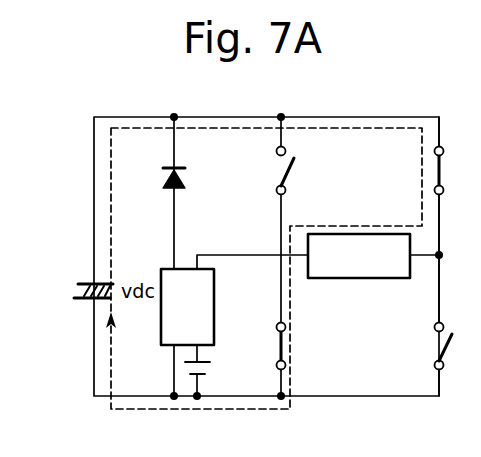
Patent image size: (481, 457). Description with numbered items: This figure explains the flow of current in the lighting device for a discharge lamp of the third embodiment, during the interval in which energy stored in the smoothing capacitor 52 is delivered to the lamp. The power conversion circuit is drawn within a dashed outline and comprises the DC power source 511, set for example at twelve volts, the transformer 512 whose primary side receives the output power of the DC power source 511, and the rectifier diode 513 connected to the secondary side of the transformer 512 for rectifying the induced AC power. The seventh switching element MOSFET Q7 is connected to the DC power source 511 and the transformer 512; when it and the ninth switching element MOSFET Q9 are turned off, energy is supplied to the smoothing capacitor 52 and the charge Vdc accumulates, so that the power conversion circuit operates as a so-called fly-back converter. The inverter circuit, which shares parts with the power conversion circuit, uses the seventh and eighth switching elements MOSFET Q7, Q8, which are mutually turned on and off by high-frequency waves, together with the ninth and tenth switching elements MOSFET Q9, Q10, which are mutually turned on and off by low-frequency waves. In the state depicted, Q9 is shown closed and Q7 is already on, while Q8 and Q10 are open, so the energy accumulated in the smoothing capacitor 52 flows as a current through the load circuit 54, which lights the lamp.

The smoothing capacitor 52 is at (78, 292).
The rectifier diode 513 is at (164, 190).
The transformer 512 is at (175, 338).
The DC power source 511 is at (207, 368).
The load circuit 54 is at (342, 278).
The seventh switching element MOSFET Q7 is at (264, 346).
The eighth switching element MOSFET Q8 is at (268, 171).
The ninth switching element MOSFET Q9 is at (414, 171).
The tenth switching element MOSFET Q10 is at (422, 346).